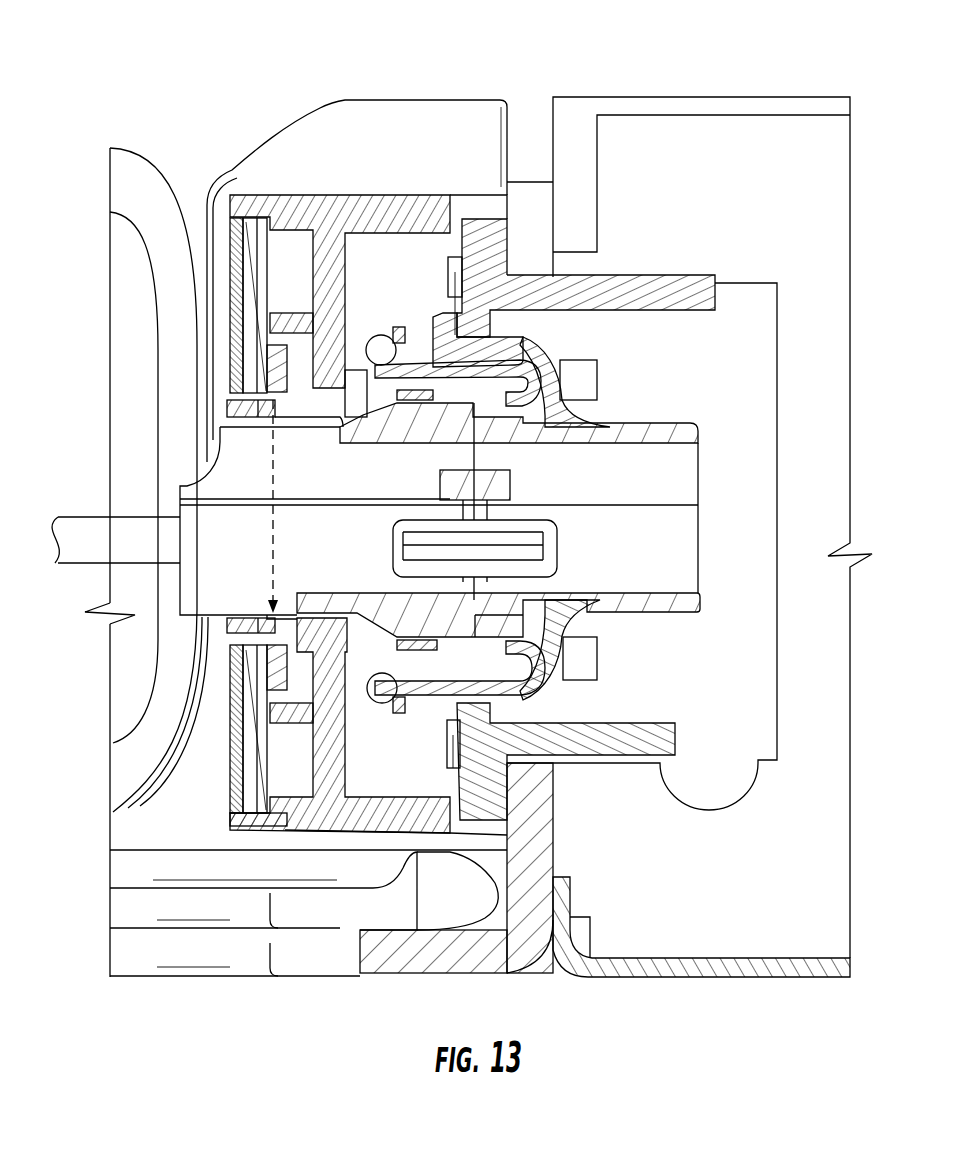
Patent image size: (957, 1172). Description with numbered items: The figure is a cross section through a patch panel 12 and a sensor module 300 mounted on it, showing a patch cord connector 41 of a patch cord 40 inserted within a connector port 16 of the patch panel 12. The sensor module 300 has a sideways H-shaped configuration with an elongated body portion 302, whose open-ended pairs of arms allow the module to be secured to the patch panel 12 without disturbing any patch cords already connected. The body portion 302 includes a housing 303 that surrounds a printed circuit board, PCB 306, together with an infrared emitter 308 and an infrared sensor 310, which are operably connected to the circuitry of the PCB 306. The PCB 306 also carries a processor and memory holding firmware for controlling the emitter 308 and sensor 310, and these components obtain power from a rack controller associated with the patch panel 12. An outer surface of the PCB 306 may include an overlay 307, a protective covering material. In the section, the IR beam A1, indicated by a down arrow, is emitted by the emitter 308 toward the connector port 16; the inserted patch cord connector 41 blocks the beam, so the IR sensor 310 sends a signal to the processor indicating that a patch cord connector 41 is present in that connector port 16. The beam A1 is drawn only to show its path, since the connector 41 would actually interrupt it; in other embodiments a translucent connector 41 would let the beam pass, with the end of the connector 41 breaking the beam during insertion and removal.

The patch panel 12 is at (757, 112).
The connector port 16 is at (557, 383).
The patch cord 40 is at (93, 567).
The patch cord connector 41 is at (197, 520).
The sensor module 300 is at (264, 193).
The body portion 302 is at (352, 225).
The housing 303 is at (273, 827).
The printed circuit board (PCB) 306 is at (100, 1020).
The overlay 307 is at (232, 762).
The IR emitter 308 is at (273, 375).
The IR sensor 310 is at (293, 830).
The IR beam A1 is at (268, 467).